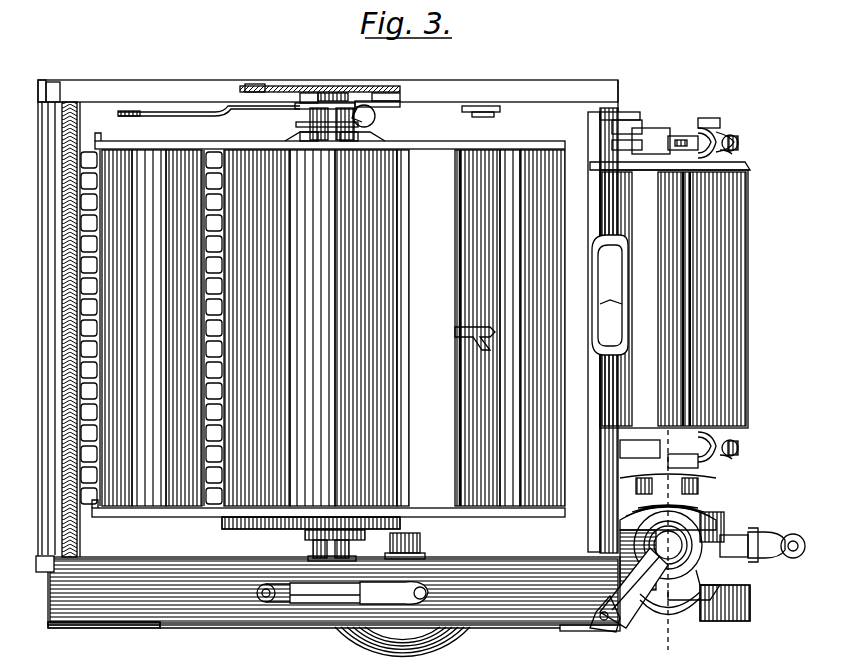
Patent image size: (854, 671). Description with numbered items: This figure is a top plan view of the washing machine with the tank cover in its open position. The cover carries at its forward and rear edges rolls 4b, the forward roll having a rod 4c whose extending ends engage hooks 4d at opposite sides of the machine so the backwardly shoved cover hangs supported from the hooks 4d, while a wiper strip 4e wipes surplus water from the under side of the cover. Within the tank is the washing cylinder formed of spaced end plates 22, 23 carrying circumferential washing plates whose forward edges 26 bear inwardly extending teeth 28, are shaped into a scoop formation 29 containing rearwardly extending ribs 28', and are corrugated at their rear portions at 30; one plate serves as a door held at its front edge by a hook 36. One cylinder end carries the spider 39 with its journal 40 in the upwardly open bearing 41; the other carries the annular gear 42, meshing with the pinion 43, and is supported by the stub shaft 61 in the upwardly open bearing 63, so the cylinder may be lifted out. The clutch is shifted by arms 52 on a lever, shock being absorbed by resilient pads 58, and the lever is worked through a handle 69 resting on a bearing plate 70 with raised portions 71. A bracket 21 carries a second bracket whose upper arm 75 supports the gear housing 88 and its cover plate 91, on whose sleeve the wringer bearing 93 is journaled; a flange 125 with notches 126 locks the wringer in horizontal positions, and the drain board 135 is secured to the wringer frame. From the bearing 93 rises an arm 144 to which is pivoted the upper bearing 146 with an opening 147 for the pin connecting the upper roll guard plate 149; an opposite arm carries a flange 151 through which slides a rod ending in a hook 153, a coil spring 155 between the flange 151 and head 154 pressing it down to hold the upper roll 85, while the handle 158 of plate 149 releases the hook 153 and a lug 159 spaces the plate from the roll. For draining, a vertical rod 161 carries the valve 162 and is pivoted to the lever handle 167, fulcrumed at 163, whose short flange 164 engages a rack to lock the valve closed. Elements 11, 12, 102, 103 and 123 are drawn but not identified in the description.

The rolls 4b is at (38, 565).
The rod 4c is at (40, 80).
The hooks 4d is at (58, 92).
The wiper strip 4e is at (78, 108).
The base 11 is at (334, 614).
The shaft axis 12 is at (655, 418).
The bracket 21 is at (602, 628).
The end plate 22 is at (163, 513).
The end plate 23 is at (440, 152).
The forward edge 26 is at (95, 270).
The teeth 28 is at (158, 328).
The ribs 28' is at (140, 328).
The scoop formation 29 is at (95, 340).
The corrugations 30 is at (332, 345).
The hook 36 is at (470, 338).
The spider 39 is at (318, 137).
The journal 40 is at (348, 92).
The bearing 41 is at (292, 86).
The annular gear 42 is at (250, 530).
The pinion 43 is at (420, 548).
The arms 52 is at (527, 649).
The resilient pads 58 is at (350, 649).
The stub shaft 61 is at (326, 558).
The bearing 63 is at (312, 550).
The handle 69 is at (400, 598).
The bearing plate 70 is at (330, 602).
The raised portions 71 is at (265, 592).
The upper arm 75 is at (622, 572).
The upper roll 85 is at (690, 272).
The gear housing 88 is at (632, 540).
The cover plate 91 is at (700, 507).
The bearing 93 is at (695, 493).
The knob 102 is at (786, 536).
The shaft 103 is at (745, 552).
The block 123 is at (752, 604).
The flange 125 is at (700, 583).
The notches 126 is at (665, 596).
The drain board 135 is at (735, 308).
The arm 144 is at (618, 140).
The upper bearing 146 is at (648, 130).
The opening 147 is at (668, 140).
The upper roll guard plate 149 is at (625, 295).
The flange 151 is at (726, 135).
The hook 153 is at (702, 128).
The head 154 is at (742, 143).
The coil spring 155 is at (735, 156).
The handle 158 is at (600, 315).
The lug 159 is at (650, 168).
The rod 161 is at (388, 96).
The valve 162 is at (385, 118).
The fulcrum 163 is at (482, 110).
The flange 164 is at (268, 86).
The lever handle 167 is at (209, 121).